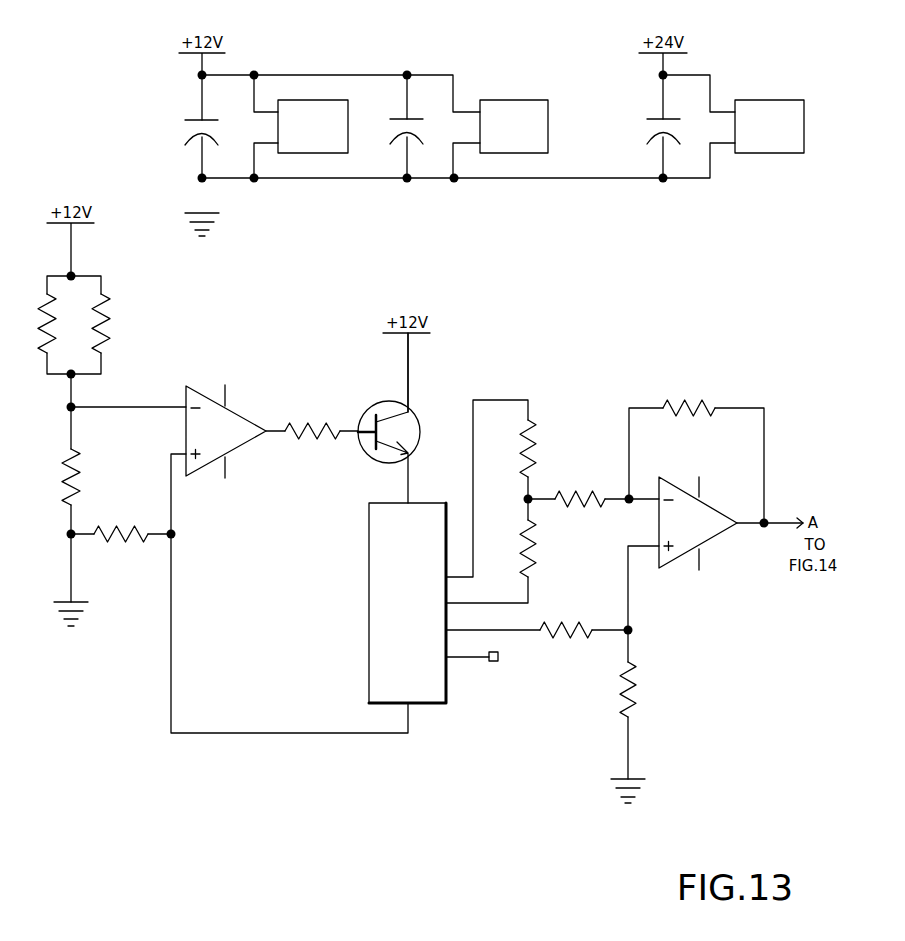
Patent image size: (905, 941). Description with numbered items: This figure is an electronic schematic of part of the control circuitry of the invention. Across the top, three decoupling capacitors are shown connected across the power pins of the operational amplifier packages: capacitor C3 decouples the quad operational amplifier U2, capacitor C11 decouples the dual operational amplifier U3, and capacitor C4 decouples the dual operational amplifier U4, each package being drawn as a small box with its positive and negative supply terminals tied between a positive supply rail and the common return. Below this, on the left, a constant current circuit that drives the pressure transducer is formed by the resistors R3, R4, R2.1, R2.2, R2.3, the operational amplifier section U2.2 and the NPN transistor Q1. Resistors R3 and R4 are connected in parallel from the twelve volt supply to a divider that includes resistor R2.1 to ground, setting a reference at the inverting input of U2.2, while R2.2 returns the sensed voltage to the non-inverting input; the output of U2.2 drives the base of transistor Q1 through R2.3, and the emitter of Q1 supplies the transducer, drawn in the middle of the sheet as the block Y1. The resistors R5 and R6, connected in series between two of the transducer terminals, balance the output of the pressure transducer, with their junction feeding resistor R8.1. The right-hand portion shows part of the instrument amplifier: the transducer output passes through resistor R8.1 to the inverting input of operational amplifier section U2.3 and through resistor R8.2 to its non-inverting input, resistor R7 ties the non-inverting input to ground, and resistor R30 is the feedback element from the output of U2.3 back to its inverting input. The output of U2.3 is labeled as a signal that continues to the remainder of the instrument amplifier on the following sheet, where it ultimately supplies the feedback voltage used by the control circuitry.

The capacitor C3 is at (191, 132).
The capacitor C11 is at (392, 131).
The capacitor C4 is at (650, 131).
The quad operational amplifier U2 is at (313, 126).
The dual operational amplifier U3 is at (514, 126).
The dual operational amplifier U4 is at (769, 126).
The resistor R3 is at (36, 323).
The resistor R4 is at (91, 323).
The resistor network section R2.1 is at (50, 477).
The resistor network section R2.2 is at (121, 522).
The resistor network section R2.3 is at (312, 420).
The operational amplifier section U2.2 is at (226, 420).
The NPN transistor Q1 is at (389, 418).
The sensor module Y1 is at (407, 603).
The resistor R5 is at (515, 448).
The resistor R6 is at (515, 548).
The resistor network section R8.1 is at (580, 488).
The resistor network section R8.2 is at (566, 619).
The resistor R7 is at (615, 720).
The resistor R30 is at (689, 397).
The operational amplifier section U2.3 is at (698, 511).